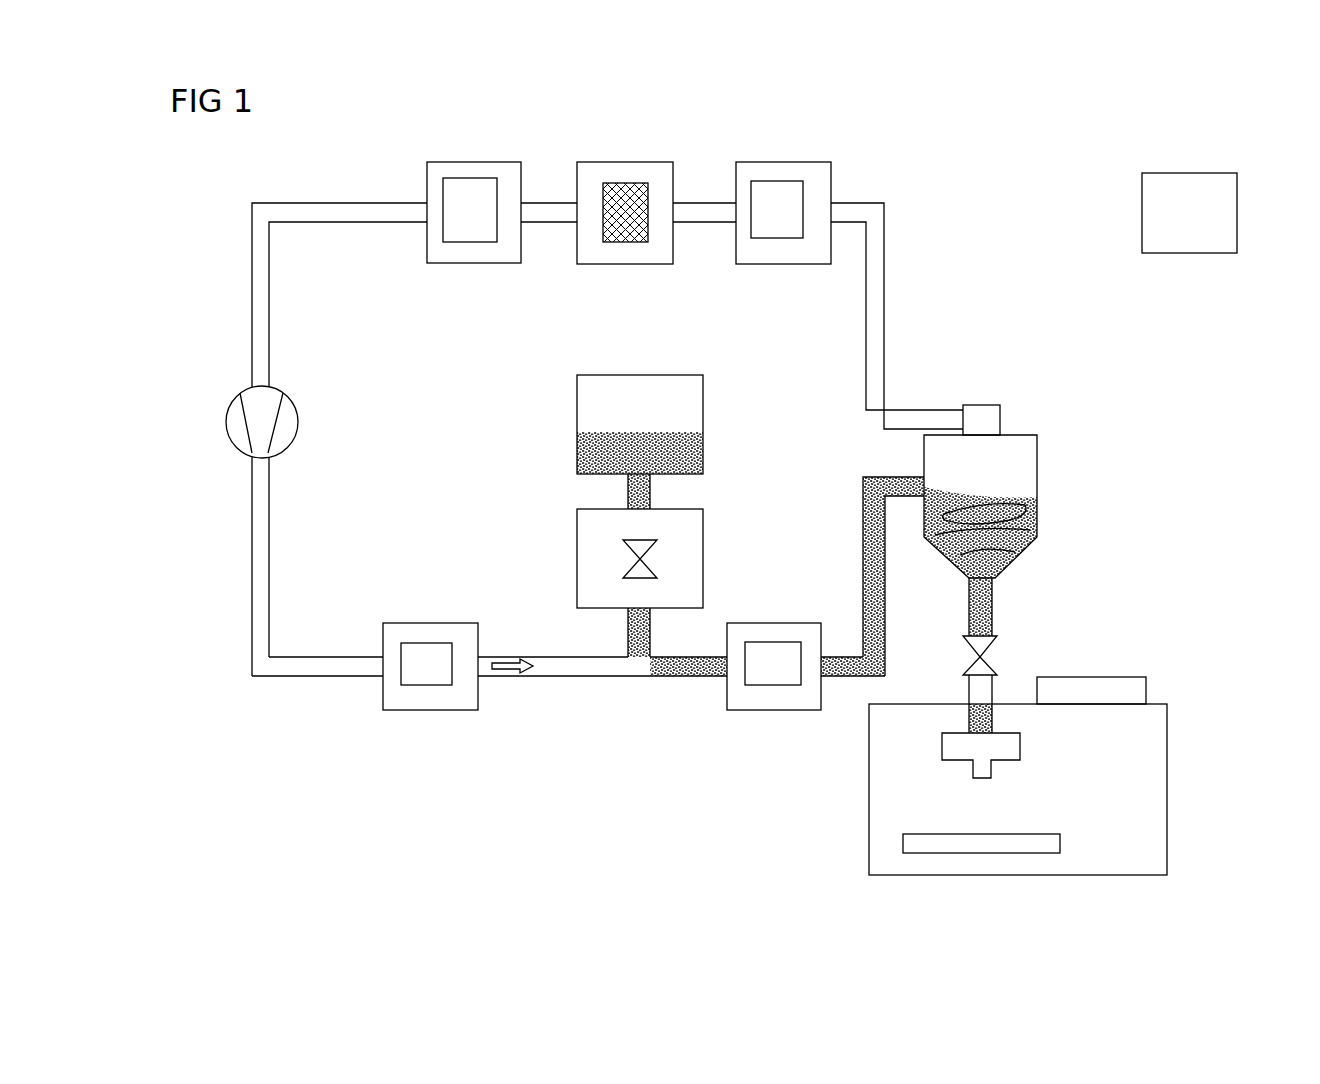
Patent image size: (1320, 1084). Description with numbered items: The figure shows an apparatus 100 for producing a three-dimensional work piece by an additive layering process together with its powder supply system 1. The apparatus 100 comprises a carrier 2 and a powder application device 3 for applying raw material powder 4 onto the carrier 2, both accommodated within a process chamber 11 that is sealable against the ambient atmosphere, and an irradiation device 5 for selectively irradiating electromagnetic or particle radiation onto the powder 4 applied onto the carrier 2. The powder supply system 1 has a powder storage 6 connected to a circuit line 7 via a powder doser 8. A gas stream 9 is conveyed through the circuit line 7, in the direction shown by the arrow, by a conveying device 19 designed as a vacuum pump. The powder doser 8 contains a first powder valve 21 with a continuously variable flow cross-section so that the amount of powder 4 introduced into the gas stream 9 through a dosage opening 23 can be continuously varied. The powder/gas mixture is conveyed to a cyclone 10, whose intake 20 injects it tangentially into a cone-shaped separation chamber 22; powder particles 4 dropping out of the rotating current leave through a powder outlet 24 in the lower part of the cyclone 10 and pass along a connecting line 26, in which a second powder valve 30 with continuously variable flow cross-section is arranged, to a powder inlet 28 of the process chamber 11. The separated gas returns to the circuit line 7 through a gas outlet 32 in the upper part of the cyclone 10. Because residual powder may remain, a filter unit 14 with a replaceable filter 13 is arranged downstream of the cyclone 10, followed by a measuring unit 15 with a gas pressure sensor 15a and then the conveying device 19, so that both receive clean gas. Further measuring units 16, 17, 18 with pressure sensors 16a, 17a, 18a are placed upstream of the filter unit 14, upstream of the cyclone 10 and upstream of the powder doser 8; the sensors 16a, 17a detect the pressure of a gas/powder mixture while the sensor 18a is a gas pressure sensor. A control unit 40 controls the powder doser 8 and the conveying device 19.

The powder supply system 1 is at (972, 168).
The carrier 2 is at (983, 855).
The powder application device 3 is at (940, 746).
The raw material powder 4 is at (986, 716).
The irradiation device 5 is at (1095, 689).
The powder storage 6 is at (637, 374).
The circuit line 7 is at (333, 202).
The powder doser 8 is at (637, 558).
The gas stream 9 is at (504, 680).
The cyclone 10 is at (1010, 506).
The process chamber 11 is at (1170, 789).
The replaceable filter 13 is at (618, 183).
The filter unit 14 is at (625, 184).
The measuring unit 15 is at (474, 212).
The pressure sensor 15a is at (474, 218).
The further measuring unit 16 is at (783, 208).
The pressure sensor 16a is at (780, 225).
The further measuring unit 17 is at (779, 668).
The pressure sensor 17a is at (770, 655).
The further measuring unit 18 is at (433, 665).
The pressure sensor 18a is at (429, 653).
The conveying device 19 is at (226, 421).
The intake 20 is at (921, 481).
The first powder valve 21 is at (621, 550).
The cone-shaped separation chamber 22 is at (1038, 520).
The dosage opening 23 is at (627, 614).
The powder outlet 24 is at (993, 586).
The connecting line 26 is at (968, 606).
The powder inlet 28 is at (982, 698).
The second powder valve 30 is at (996, 651).
The gas outlet 32 is at (978, 410).
The control unit 40 is at (1190, 172).
The apparatus 100 is at (1108, 491).